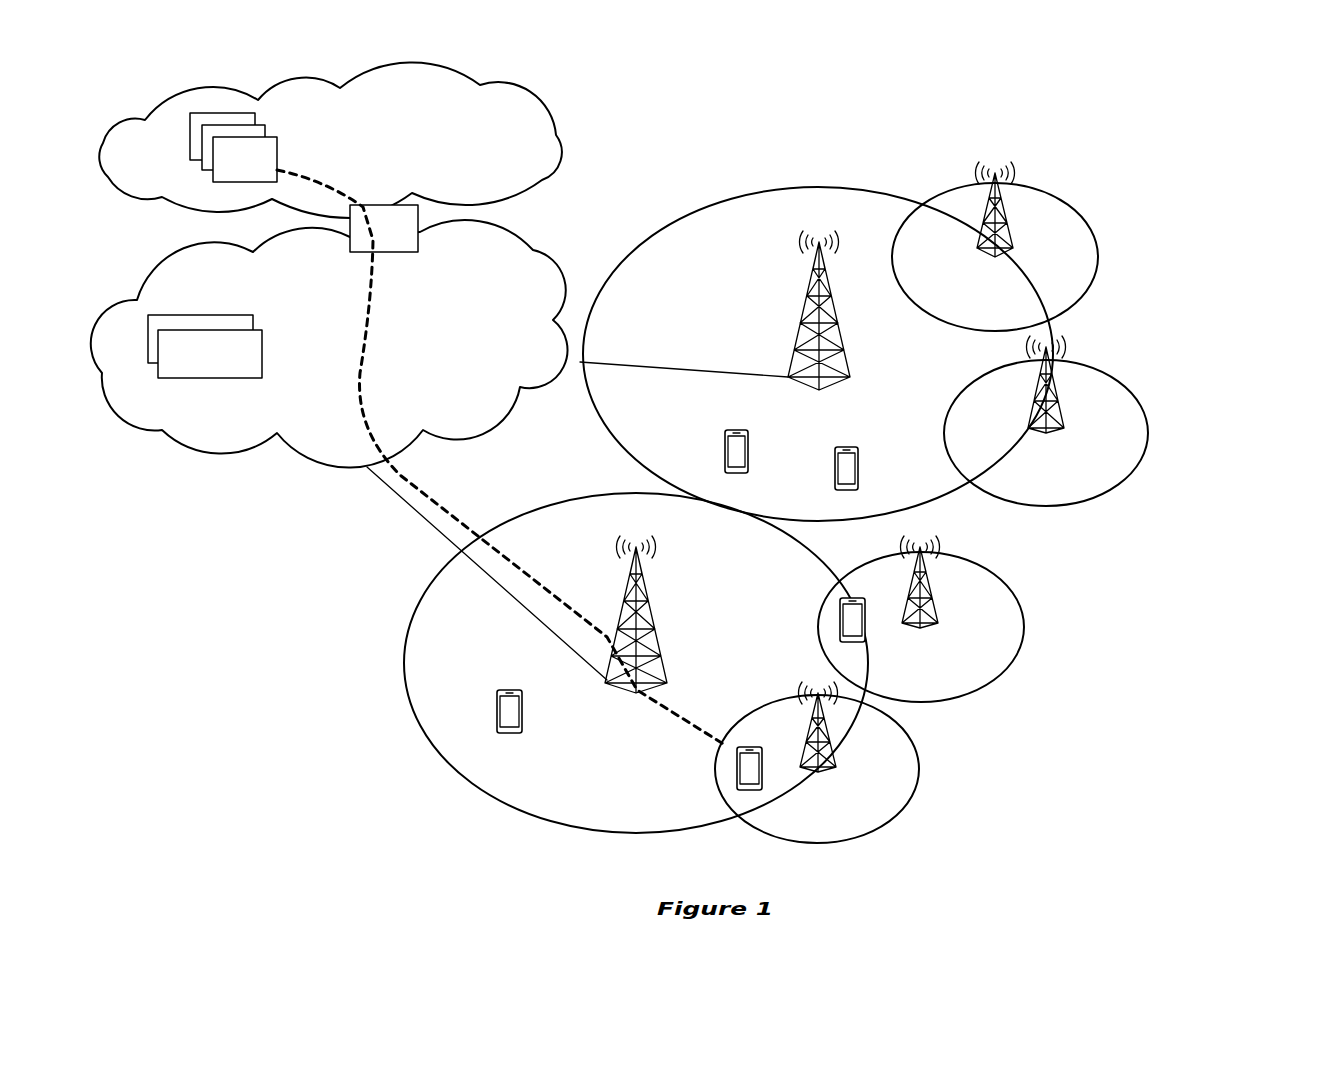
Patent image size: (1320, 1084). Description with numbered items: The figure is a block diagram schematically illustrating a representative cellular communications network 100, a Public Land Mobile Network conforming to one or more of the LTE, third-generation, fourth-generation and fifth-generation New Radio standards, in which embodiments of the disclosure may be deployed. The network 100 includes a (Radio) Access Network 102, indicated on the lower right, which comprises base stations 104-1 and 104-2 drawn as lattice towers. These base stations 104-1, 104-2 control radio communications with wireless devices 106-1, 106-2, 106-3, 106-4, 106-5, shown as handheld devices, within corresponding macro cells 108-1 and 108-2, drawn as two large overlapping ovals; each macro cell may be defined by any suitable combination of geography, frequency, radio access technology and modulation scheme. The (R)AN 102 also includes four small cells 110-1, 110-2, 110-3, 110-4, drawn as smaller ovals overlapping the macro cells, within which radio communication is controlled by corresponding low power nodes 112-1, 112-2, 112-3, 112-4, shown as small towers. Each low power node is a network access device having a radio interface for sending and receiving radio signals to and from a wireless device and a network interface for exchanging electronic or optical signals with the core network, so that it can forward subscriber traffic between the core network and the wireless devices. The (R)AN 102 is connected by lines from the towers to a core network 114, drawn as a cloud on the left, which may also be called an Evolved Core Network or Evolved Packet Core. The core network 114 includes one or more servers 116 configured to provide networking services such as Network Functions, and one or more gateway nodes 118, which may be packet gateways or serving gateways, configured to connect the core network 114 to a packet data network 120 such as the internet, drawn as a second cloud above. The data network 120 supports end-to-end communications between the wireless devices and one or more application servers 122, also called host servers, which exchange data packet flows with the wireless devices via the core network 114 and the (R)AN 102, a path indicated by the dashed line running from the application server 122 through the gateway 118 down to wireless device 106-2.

The cellular communications network 100 is at (1208, 167).
The (Radio) Access Network 102 is at (1088, 697).
The base station 104-1 is at (662, 623).
The base station 104-2 is at (847, 350).
The wireless device 106-1 is at (517, 733).
The wireless device 106-2 is at (750, 747).
The wireless device 106-3 is at (858, 642).
The wireless device 106-4 is at (748, 450).
The wireless device 106-5 is at (858, 468).
The macro cell 108-1 is at (495, 658).
The macro cell 108-2 is at (732, 290).
The small cell 110-1 is at (920, 760).
The small cell 110-2 is at (1025, 628).
The small cell 110-3 is at (1148, 432).
The small cell 110-4 is at (1098, 255).
The low power node 112-1 is at (835, 767).
The low power node 112-2 is at (938, 622).
The low power node 112-3 is at (1052, 430).
The low power node 112-4 is at (982, 252).
The core network 114 is at (425, 398).
The server 116 is at (223, 378).
The gateway node 118 is at (408, 252).
The packet data network 120 is at (423, 173).
The application server 122 is at (277, 161).